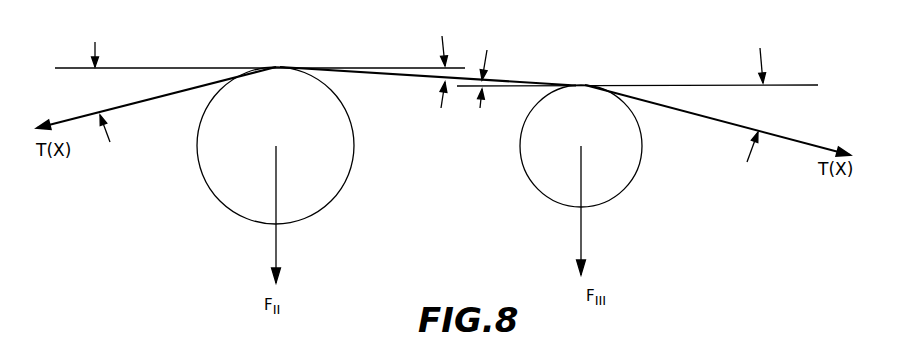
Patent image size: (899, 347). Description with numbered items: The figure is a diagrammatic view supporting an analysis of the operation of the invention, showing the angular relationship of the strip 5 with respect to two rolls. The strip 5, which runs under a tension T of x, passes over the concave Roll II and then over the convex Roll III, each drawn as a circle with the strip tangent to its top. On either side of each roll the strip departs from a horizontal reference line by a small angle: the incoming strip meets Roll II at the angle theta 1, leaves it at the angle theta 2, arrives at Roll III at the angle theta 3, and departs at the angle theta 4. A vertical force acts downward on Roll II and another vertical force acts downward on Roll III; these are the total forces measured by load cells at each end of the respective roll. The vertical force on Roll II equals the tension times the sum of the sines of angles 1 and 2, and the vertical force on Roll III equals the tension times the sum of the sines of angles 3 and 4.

The strip 5 is at (178, 92).
The Roll II is at (277, 163).
The Roll III is at (581, 172).
The angle theta 1 is at (97, 92).
The angle theta 2 is at (430, 67).
The angle theta 3 is at (495, 84).
The angle theta 4 is at (760, 105).